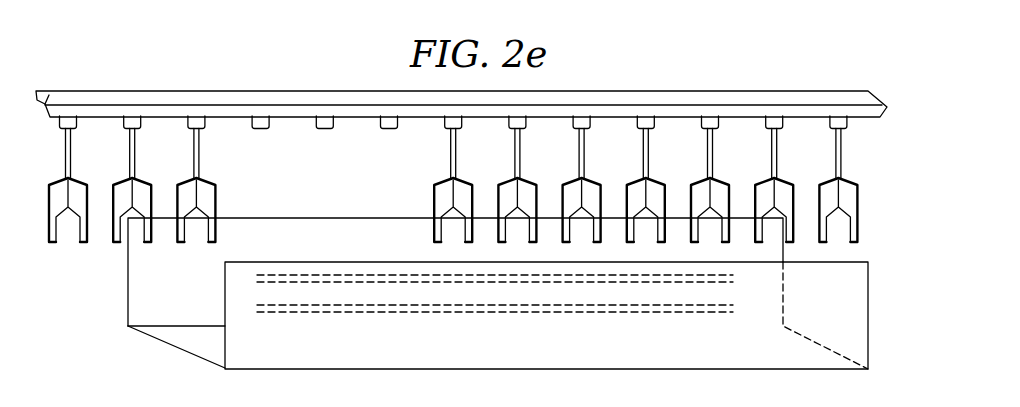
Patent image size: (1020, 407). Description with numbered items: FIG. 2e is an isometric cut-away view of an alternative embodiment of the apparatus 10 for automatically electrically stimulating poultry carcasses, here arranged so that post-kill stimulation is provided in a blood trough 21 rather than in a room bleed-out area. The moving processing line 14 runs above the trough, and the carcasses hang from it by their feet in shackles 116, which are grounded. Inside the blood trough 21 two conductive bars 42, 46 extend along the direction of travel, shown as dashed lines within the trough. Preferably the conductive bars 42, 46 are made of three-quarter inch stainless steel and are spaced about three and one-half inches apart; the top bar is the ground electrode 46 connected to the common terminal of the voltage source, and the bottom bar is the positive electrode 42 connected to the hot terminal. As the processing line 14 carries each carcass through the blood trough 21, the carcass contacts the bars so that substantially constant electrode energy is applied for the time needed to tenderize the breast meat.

The apparatus 10 is at (276, 64).
The processing line 14 is at (847, 100).
The shackle 116 is at (858, 200).
The blood trough 21 is at (128, 282).
The conductive bar 46 is at (343, 277).
The conductive bar 42 is at (343, 311).